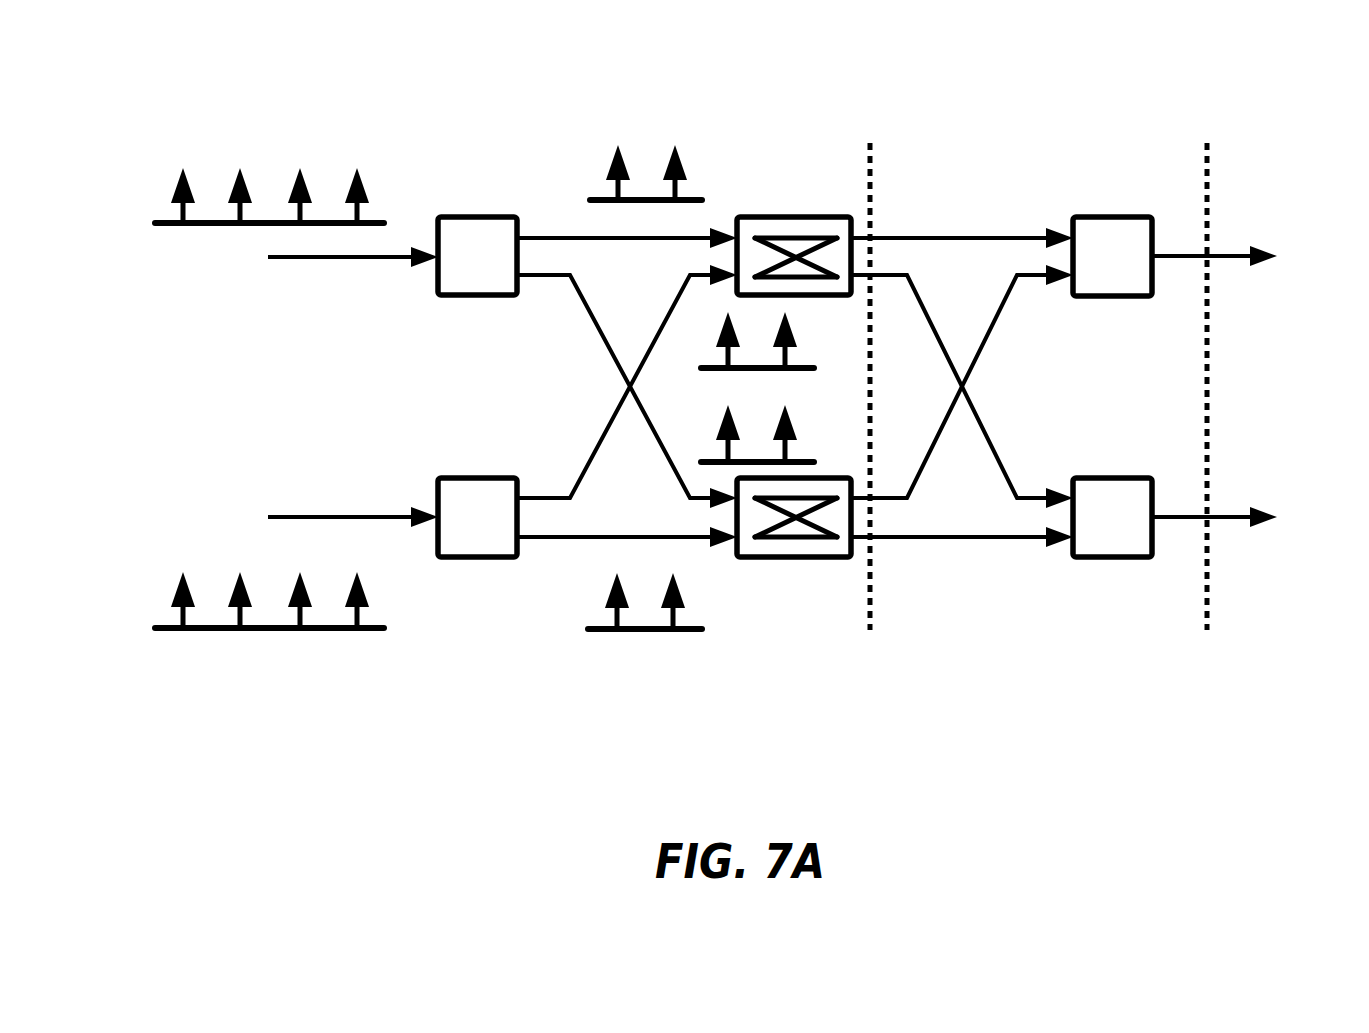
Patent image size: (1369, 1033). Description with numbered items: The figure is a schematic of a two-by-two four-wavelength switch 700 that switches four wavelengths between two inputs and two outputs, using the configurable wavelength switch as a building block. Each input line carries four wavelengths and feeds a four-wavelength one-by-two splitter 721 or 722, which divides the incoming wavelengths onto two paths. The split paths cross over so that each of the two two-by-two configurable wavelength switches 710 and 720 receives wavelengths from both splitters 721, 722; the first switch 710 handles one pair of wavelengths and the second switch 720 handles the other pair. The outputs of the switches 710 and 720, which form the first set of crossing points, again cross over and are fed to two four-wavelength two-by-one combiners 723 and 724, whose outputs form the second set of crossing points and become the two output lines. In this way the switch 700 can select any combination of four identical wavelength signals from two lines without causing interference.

The 2×2 four-wavelength switch 700 is at (778, 17).
The 2×2 CWS 710 is at (793, 217).
The 2×2 CWS 720 is at (797, 560).
The four-wavelength 1×2 splitter 721 is at (476, 217).
The four-wavelength 1×2 splitter 722 is at (476, 478).
The four-wavelength 2×1 combiner 723 is at (1110, 217).
The four-wavelength 2×1 combiner 724 is at (1110, 478).